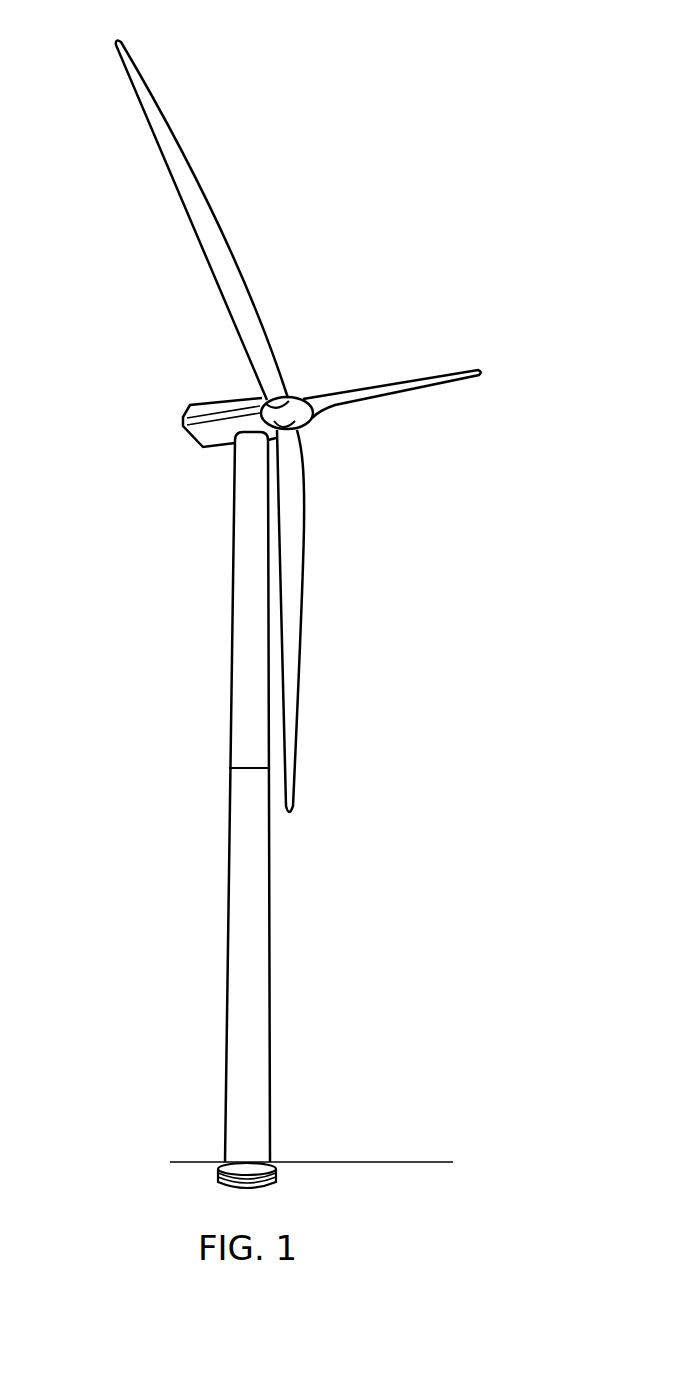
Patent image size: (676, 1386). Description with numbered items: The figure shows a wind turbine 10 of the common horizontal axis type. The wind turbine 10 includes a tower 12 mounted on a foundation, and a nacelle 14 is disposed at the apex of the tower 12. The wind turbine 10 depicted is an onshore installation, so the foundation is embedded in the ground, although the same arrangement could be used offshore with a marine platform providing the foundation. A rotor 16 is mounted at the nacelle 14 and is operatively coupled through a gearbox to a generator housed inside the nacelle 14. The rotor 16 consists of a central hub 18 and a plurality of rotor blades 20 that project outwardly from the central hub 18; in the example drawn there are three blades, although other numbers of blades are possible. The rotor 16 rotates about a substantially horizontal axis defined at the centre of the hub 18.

The wind turbine 10 is at (147, 485).
The tower 12 is at (248, 918).
The nacelle 14 is at (208, 410).
The rotor 16 is at (480, 320).
The central hub 18 is at (303, 417).
The rotor blades 20 is at (183, 182).